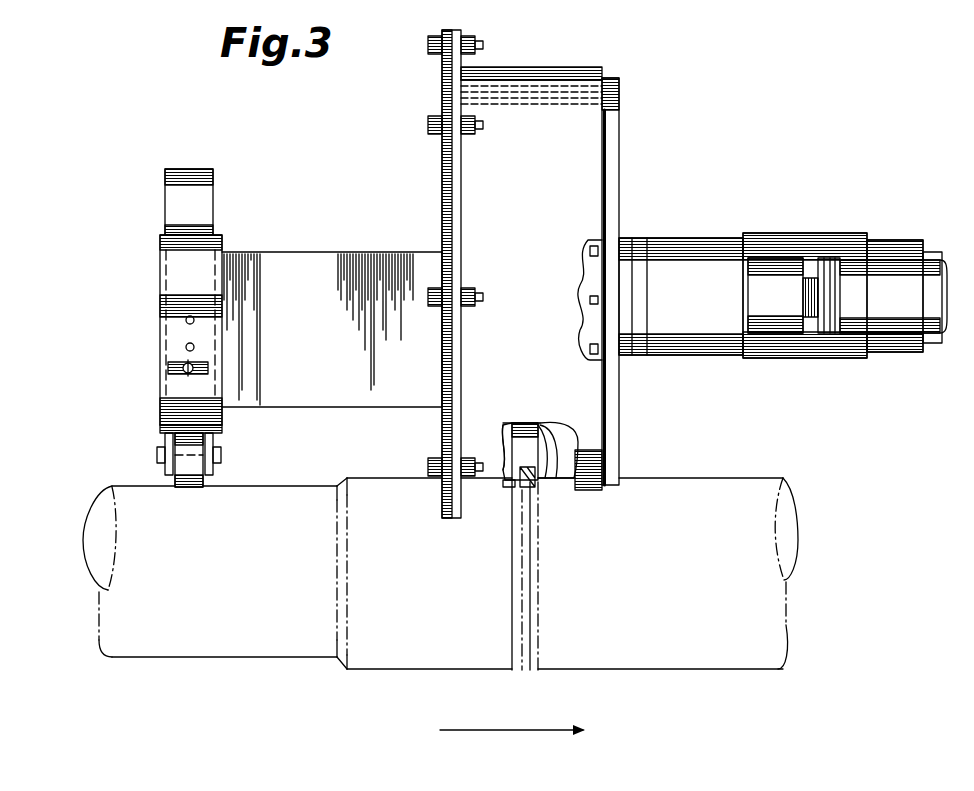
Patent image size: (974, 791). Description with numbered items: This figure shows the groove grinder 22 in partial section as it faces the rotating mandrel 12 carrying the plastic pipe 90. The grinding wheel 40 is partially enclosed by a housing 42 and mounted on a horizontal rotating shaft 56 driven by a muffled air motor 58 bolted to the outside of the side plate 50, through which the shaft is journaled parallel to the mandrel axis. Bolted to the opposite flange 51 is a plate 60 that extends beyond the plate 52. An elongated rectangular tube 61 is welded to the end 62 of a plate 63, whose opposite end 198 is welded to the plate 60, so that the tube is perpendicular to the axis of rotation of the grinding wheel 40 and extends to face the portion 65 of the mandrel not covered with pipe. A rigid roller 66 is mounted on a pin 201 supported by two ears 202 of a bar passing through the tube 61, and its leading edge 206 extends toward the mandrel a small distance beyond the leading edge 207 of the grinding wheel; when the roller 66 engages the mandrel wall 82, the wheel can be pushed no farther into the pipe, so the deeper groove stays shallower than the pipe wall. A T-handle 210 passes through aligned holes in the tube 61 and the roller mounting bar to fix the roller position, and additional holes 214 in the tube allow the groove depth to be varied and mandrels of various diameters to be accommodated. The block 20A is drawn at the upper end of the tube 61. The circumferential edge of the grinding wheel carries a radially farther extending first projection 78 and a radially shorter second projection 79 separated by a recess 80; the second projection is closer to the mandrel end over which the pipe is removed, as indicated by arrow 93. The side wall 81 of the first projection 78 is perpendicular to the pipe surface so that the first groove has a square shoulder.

The mandrel 12 is at (233, 647).
The plastic pipe 90 is at (688, 658).
The arrow 93 is at (505, 705).
The portion of the mandrel not covered with pipe 65 is at (112, 496).
The mandrel wall 82 is at (236, 486).
The plate 60 is at (442, 168).
The flange 51 is at (461, 33).
The housing 42 is at (526, 61).
The plate 52 is at (590, 78).
The side plate 50 is at (619, 121).
The recess 80 is at (535, 470).
The horizontal rotating shaft 56 is at (601, 305).
The groove grinder 22 is at (686, 178).
The muffled air motor 58 is at (893, 325).
The grinding wheel 40 is at (528, 422).
The first projection 78 is at (505, 420).
The second projection 79 is at (548, 426).
The side wall 81 is at (530, 489).
The leading edge of the grinding wheel 207 is at (505, 488).
The end of the plate 62 is at (220, 252).
The plate 63 is at (291, 261).
The opposite end of the plate 198 is at (443, 258).
The spindle block 20A is at (189, 177).
The rectangular tube 61 is at (167, 299).
The additional holes 214 is at (194, 320).
The T-handle 210 is at (178, 363).
The pin 201 is at (166, 438).
The ears 202 is at (215, 441).
The leading edge of the roller 206 is at (190, 487).
The rigid roller 66 is at (176, 482).